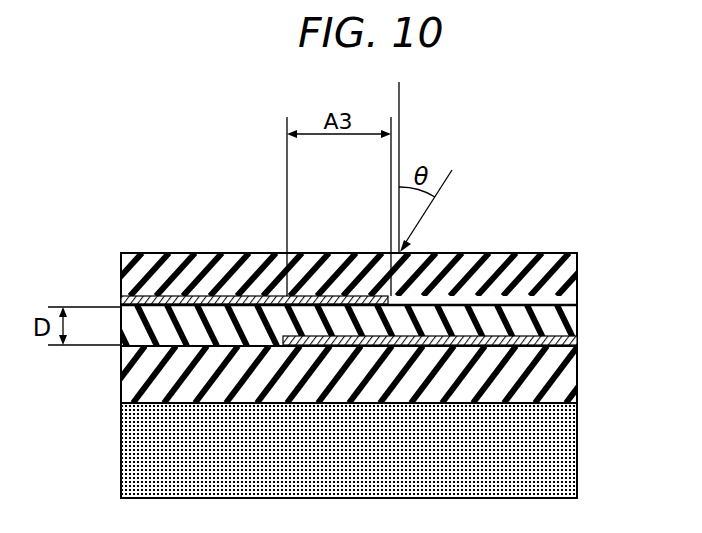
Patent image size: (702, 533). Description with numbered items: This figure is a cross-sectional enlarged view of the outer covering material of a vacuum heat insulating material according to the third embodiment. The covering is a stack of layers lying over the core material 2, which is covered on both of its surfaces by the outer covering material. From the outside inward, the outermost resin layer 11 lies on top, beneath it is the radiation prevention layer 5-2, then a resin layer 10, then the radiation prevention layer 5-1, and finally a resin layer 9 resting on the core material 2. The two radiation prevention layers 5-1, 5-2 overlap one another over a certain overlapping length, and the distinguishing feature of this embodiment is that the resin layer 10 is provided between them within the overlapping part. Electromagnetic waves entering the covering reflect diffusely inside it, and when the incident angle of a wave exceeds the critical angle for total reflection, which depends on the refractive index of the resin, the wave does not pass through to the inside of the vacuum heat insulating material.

The outermost resin layer 11 is at (495, 270).
The radiation prevention layer 5-2 is at (128, 293).
The resin layer 10 is at (540, 323).
The radiation prevention layer 5-1 is at (565, 340).
The resin layer 9 is at (522, 375).
The core material 2 is at (522, 447).